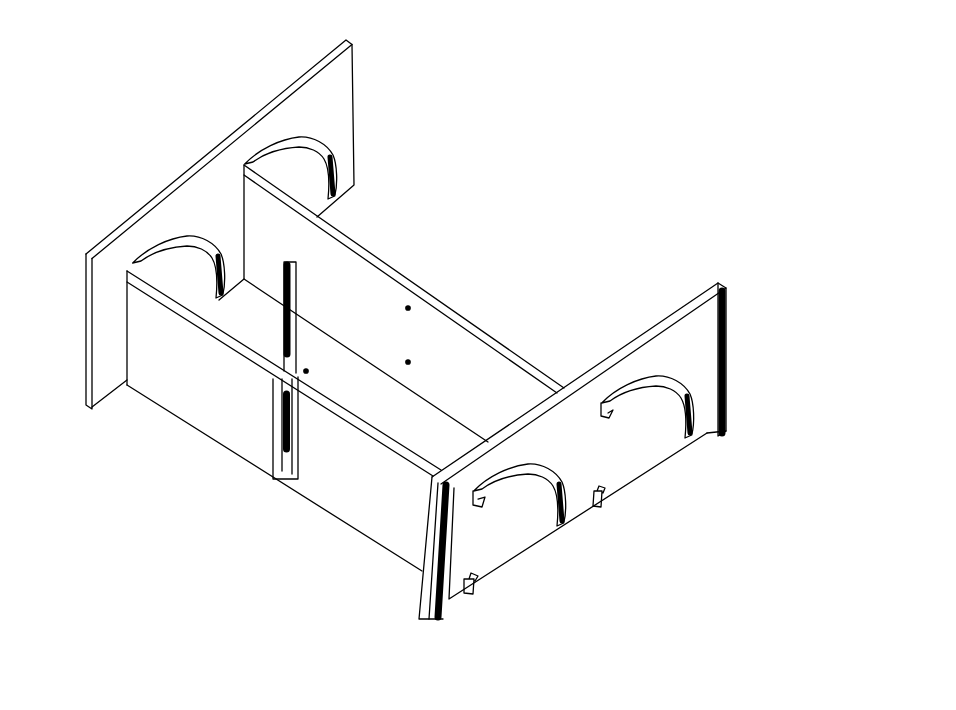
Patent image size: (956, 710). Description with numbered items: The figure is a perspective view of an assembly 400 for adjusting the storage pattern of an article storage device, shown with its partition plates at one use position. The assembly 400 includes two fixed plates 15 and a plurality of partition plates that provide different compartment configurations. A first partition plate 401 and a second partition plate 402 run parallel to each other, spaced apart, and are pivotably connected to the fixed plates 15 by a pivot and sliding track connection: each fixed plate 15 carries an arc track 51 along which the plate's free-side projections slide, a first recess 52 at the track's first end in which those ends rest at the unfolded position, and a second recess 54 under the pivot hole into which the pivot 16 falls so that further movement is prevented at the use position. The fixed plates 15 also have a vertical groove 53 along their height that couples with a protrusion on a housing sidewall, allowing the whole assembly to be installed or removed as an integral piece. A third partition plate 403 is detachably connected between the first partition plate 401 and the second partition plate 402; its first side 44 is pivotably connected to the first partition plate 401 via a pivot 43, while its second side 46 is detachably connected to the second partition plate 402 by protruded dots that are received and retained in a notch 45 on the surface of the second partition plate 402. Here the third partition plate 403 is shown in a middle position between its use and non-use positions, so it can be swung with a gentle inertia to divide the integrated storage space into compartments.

The fixed plate 15 is at (277, 98).
The pivot 16 is at (209, 436).
The pivot 43 is at (306, 368).
The first side 44 is at (284, 457).
The notch 45 is at (411, 305).
The second side 46 is at (286, 261).
The arc track 51 is at (667, 382).
The first recess 52 is at (608, 420).
The vertical groove 53 is at (438, 556).
The second recess 54 is at (479, 589).
The assembly 400 is at (751, 134).
The first partition plate 401 is at (348, 489).
The second partition plate 402 is at (498, 327).
The third partition plate 403 is at (285, 317).